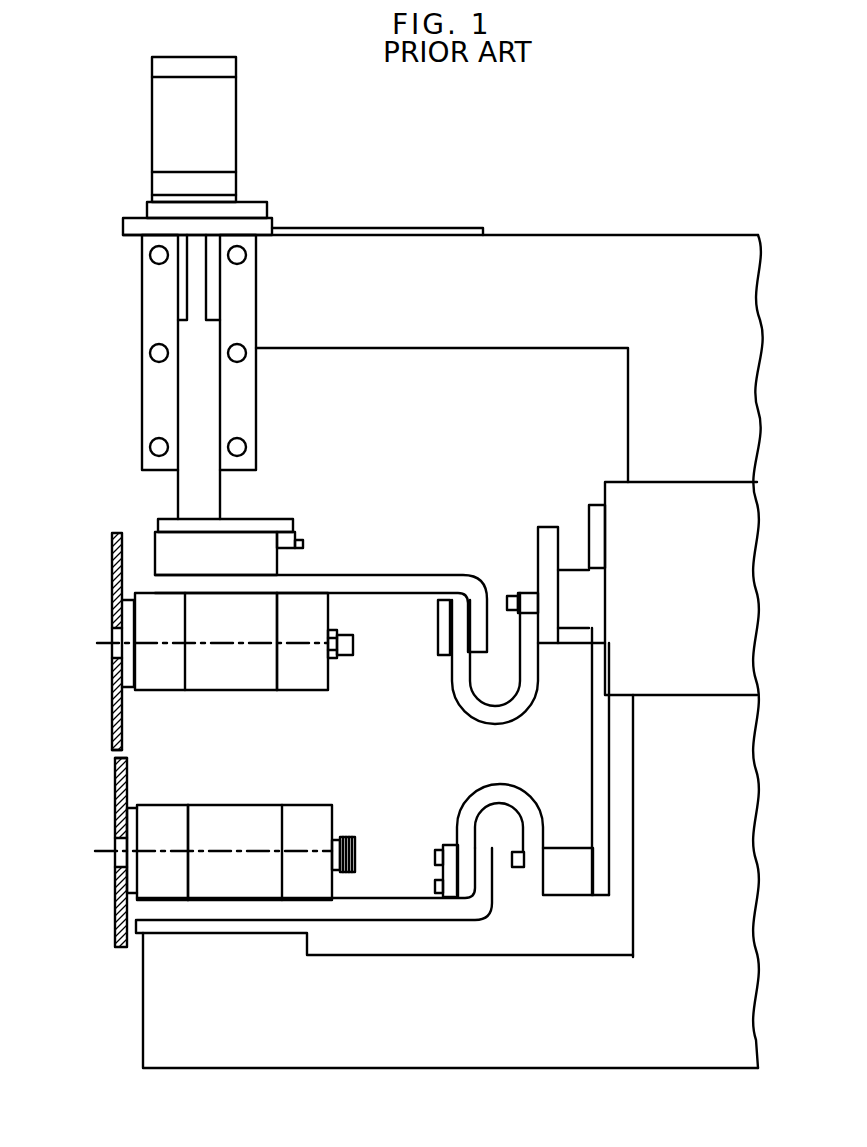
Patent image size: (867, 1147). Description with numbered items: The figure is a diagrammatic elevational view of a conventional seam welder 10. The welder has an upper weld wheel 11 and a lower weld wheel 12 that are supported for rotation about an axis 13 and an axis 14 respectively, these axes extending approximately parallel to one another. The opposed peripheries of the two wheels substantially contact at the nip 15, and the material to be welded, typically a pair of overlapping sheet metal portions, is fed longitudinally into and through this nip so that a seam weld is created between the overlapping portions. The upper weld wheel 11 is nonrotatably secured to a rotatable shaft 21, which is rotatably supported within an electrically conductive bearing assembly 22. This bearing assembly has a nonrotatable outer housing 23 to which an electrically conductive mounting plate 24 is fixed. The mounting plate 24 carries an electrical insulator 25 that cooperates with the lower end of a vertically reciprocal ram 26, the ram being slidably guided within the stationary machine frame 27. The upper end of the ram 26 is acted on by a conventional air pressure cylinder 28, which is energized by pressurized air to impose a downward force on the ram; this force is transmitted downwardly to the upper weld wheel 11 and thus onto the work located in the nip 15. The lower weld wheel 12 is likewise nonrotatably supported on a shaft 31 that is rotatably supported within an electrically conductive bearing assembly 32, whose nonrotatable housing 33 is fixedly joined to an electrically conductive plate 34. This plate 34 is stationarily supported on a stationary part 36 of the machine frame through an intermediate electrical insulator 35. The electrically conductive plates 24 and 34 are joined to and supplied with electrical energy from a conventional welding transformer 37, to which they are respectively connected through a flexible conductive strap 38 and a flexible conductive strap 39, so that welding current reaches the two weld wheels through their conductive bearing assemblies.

The seam welder 10 is at (122, 988).
The upper weld wheel 11 is at (112, 557).
The lower weld wheel 12 is at (117, 923).
The axis 13 is at (105, 641).
The axis 14 is at (105, 853).
The nip 15 is at (112, 753).
The rotatable shaft 21 is at (118, 650).
The electrically conductive bearing assembly 22 is at (204, 698).
The nonrotatable outer housing 23 is at (257, 672).
The electrically conductive mounting plate 24 is at (380, 585).
The electrical insulator 25 is at (245, 548).
The vertically reciprocal ram 26 is at (188, 372).
The stationary machine frame 27 is at (618, 246).
The air pressure cylinder 28 is at (163, 120).
The shaft 31 is at (115, 843).
The electrically conductive bearing assembly 32 is at (275, 796).
The nonrotatable housing 33 is at (218, 812).
The electrically conductive plate 34 is at (453, 913).
The electrical insulator 35 is at (250, 933).
The stationary part of the machine frame 36 is at (193, 1048).
The welding transformer 37 is at (620, 492).
The flexible conductive strap 38 is at (485, 712).
The flexible conductive strap 39 is at (525, 798).